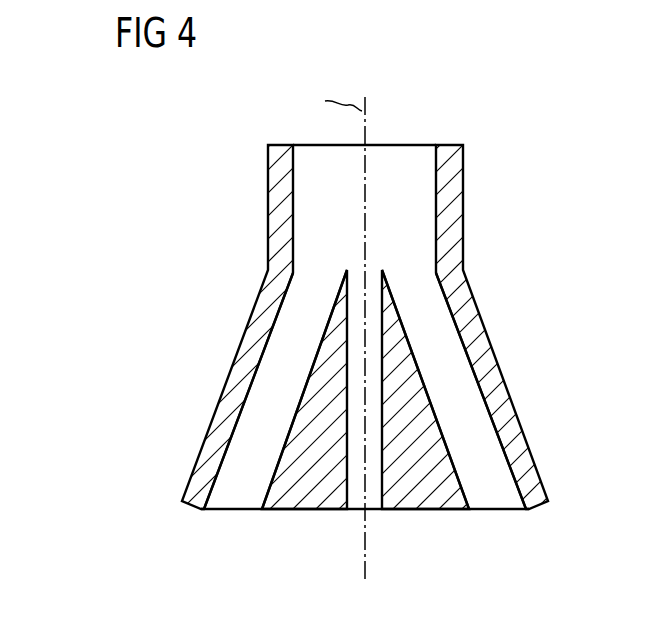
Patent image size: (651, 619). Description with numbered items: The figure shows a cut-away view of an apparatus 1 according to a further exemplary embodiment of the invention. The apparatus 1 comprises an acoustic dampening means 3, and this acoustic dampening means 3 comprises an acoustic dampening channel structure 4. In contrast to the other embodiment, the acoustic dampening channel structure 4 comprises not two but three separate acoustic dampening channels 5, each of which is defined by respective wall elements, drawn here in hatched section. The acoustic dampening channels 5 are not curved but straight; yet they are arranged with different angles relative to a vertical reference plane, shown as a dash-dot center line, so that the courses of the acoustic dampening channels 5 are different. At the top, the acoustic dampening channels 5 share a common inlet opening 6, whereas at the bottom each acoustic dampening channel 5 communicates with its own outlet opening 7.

The apparatus 1 is at (462, 114).
The acoustic dampening means 3 is at (455, 223).
The acoustic dampening channel structure 4 is at (526, 323).
The acoustic dampening channels 5 is at (268, 385).
The common inlet opening 6 is at (409, 155).
The outlet opening 7 is at (232, 500).